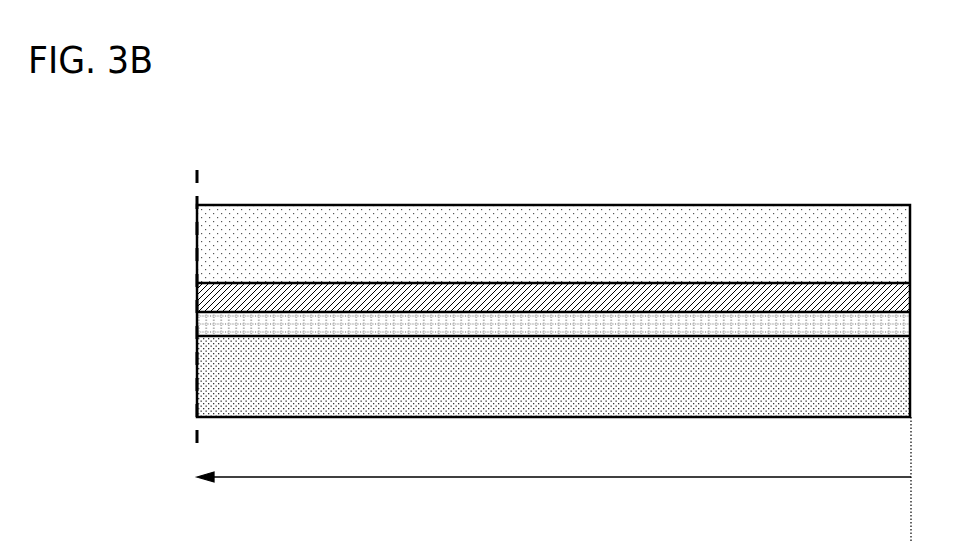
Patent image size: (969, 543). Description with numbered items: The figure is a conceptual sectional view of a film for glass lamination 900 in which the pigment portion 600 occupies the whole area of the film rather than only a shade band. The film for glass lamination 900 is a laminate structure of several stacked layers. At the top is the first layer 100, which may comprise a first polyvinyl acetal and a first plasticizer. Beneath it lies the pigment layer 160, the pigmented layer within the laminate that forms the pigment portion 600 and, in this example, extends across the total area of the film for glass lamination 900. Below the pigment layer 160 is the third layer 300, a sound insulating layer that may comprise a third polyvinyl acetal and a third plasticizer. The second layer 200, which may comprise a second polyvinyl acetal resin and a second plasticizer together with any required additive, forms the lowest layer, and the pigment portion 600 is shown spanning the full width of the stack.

The film for glass lamination 900 is at (268, 125).
The first layer 100 is at (242, 243).
The pigment layer 160 is at (527, 302).
The third layer 300 is at (740, 325).
The second layer 200 is at (592, 383).
The pigment portion 600 is at (554, 480).